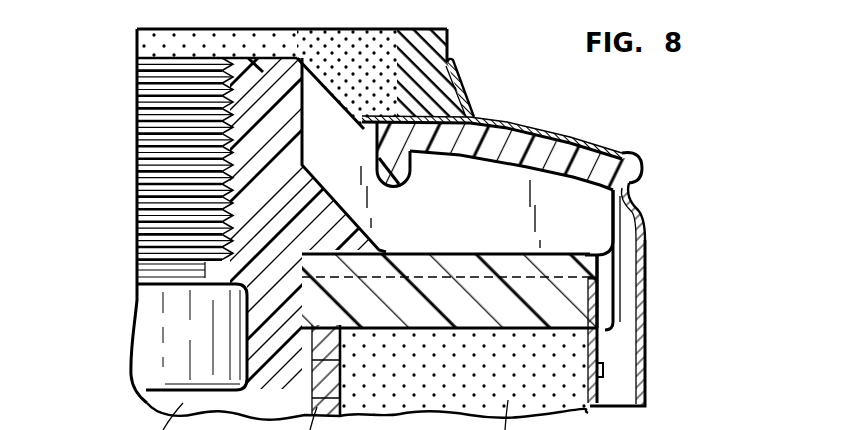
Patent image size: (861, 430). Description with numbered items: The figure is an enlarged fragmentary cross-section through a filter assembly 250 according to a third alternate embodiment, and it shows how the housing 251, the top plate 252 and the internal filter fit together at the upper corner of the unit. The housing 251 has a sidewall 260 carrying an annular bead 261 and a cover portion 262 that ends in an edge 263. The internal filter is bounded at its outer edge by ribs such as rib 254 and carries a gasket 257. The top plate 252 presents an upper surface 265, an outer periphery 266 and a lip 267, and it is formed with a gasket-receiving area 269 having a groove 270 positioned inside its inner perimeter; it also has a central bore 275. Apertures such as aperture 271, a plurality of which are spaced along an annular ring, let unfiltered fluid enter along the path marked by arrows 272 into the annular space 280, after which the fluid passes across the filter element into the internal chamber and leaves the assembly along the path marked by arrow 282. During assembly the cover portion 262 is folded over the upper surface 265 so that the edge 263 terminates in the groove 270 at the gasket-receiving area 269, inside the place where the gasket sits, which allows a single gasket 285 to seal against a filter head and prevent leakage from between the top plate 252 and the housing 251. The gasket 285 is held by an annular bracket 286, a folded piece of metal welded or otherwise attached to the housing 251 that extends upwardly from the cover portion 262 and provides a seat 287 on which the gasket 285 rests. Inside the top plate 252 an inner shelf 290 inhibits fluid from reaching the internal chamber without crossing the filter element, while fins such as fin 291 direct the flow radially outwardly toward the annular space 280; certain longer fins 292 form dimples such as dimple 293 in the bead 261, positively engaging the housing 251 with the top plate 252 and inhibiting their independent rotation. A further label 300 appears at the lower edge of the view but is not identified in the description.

The assembly 250 is at (650, 133).
The housing 251 is at (646, 299).
The top plate 252 is at (248, 58).
The rib 254 is at (604, 370).
The gasket 257 is at (485, 328).
The sidewall 260 is at (646, 348).
The annular bead 261 is at (636, 214).
The cover portion 262 is at (577, 126).
The edge 263 is at (348, 185).
The upper surface 265 is at (272, 57).
The outer periphery 266 is at (596, 162).
The lip 267 is at (642, 181).
The gasket-receiving area 269 is at (398, 82).
The groove 270 is at (362, 124).
The aperture 271 is at (320, 112).
The arrows 272 is at (353, 188).
The central bore 275 is at (185, 318).
The annular space 280 is at (614, 358).
The arrow 282 is at (230, 403).
The gasket 285 is at (450, 42).
The annular bracket 286 is at (460, 80).
The seat 287 is at (444, 95).
The inner shelf 290 is at (355, 238).
The fin 291 is at (527, 234).
The fins 292 is at (613, 220).
The dimple 293 is at (634, 195).
The base 300 is at (612, 408).